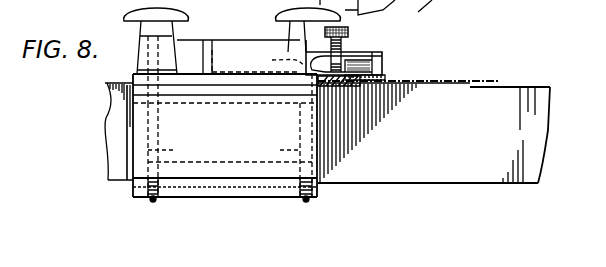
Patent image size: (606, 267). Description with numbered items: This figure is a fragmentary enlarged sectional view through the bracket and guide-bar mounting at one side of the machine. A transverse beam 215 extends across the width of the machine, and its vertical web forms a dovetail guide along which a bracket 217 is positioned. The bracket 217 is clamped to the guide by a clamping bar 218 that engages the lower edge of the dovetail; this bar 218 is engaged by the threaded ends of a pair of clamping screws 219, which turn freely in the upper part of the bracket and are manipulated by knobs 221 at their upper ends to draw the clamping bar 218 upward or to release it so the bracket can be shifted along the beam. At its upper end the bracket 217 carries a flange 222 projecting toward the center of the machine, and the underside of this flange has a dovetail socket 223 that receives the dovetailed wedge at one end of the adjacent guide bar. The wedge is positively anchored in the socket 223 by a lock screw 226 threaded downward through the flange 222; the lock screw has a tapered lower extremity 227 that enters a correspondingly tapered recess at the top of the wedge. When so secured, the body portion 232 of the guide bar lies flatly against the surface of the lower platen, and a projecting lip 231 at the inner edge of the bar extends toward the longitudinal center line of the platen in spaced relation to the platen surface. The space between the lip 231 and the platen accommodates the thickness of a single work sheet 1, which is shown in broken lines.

The work sheet 1 is at (505, 61).
The transverse beam 215 is at (542, 88).
The bracket 217 is at (236, 138).
The clamping bar 218 is at (133, 187).
The clamping screws 219 is at (224, 151).
The knobs 221 is at (276, 16).
The flange 222 is at (370, 52).
The dovetail socket 223 is at (383, 72).
The lock screw 226 is at (348, 31).
The tapered lower extremity 227 is at (241, 57).
The projecting lip 231 is at (380, 82).
The body portion 232 is at (345, 90).